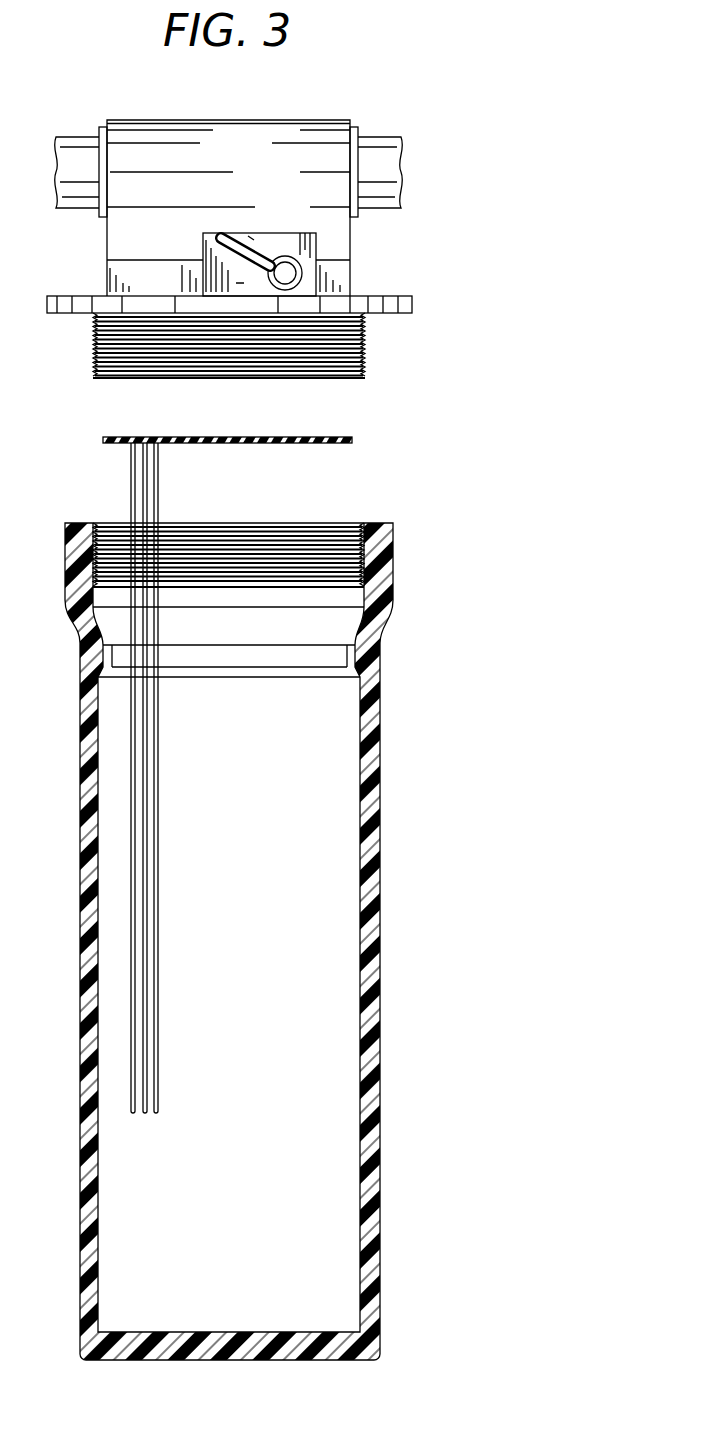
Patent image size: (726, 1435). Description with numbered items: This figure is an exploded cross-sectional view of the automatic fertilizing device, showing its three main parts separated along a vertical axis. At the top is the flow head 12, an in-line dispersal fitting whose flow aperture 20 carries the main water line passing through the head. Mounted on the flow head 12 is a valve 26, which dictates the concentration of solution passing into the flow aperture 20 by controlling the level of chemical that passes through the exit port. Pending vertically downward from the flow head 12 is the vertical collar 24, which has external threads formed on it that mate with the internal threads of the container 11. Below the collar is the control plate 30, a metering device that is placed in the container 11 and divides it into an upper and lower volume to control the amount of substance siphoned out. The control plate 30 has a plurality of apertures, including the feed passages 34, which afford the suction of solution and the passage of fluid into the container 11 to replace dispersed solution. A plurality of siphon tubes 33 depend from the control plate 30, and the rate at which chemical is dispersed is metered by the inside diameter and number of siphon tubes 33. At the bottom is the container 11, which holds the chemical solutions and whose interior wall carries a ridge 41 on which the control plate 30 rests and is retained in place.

The container 11 is at (382, 903).
The flow head 12 is at (332, 118).
The flow aperture 20 is at (428, 171).
The vertical collar 24 is at (365, 345).
The valve 26 is at (300, 258).
The control plate 30 is at (350, 435).
The siphon tubes 33 is at (159, 455).
The feed passages 34 is at (303, 437).
The ridge 41 is at (347, 653).